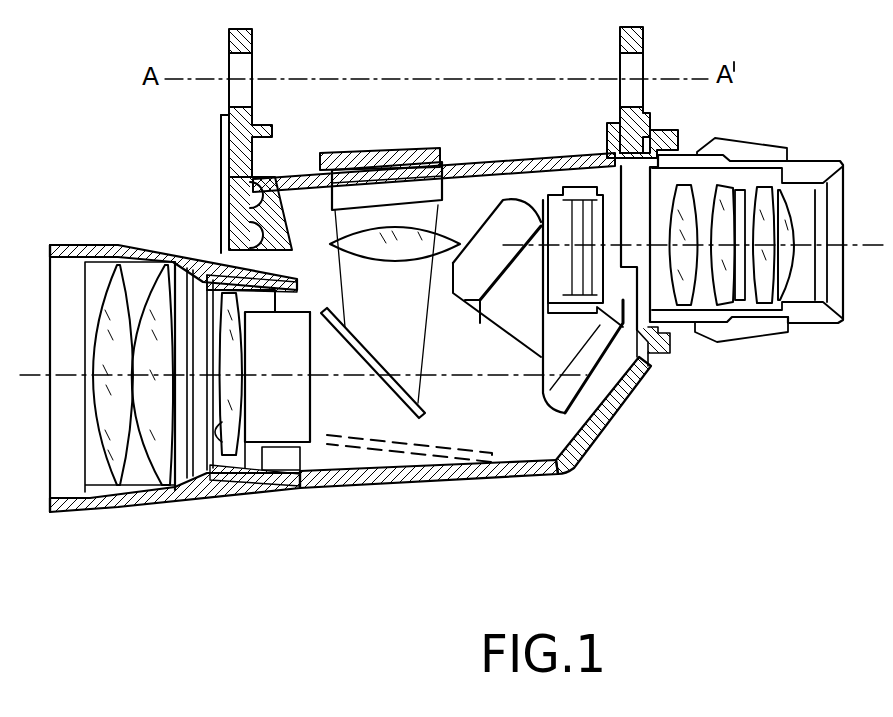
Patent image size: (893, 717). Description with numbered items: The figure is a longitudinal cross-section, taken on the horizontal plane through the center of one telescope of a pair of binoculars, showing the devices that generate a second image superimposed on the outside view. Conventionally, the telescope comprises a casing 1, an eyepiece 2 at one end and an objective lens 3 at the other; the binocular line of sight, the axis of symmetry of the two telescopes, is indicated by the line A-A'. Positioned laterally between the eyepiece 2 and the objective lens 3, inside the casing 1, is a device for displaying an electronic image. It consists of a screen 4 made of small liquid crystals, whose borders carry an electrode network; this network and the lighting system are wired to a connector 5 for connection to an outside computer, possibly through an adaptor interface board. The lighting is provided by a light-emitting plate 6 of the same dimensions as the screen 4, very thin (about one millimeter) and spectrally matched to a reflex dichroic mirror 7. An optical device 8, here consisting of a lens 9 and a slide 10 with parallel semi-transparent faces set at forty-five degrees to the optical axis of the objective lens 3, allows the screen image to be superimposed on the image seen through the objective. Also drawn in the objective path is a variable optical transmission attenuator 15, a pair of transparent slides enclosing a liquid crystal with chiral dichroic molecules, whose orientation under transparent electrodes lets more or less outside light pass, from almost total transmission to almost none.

The casing 1 is at (590, 440).
The eyepiece 2 is at (803, 275).
The objective lens 3 is at (193, 448).
The screen 4 is at (428, 188).
The connector 5 is at (474, 172).
The light-emitting plate 6 is at (357, 180).
The reflex dichroic mirror 7 is at (410, 168).
The optical device 8 is at (170, 140).
The lens 9 is at (388, 252).
The slide 10 is at (456, 452).
The variable optical transmission attenuator 15 is at (230, 466).